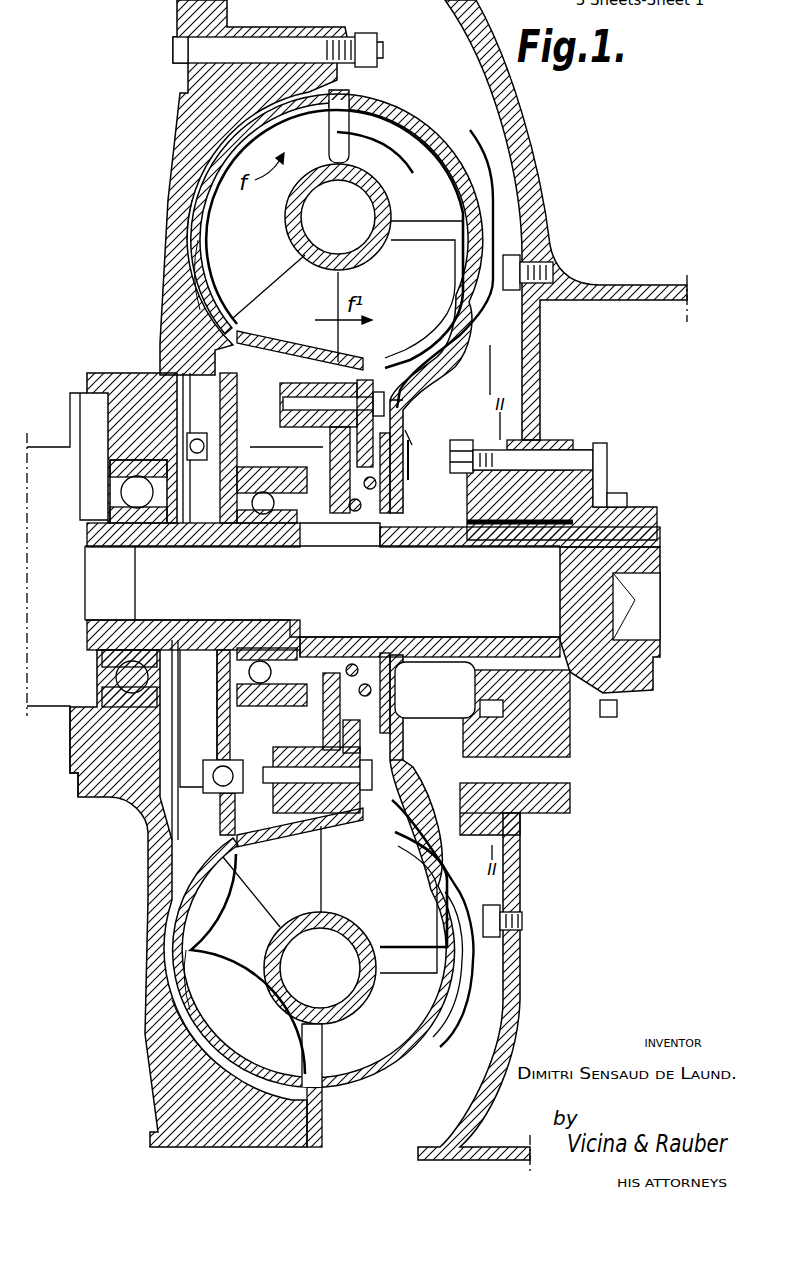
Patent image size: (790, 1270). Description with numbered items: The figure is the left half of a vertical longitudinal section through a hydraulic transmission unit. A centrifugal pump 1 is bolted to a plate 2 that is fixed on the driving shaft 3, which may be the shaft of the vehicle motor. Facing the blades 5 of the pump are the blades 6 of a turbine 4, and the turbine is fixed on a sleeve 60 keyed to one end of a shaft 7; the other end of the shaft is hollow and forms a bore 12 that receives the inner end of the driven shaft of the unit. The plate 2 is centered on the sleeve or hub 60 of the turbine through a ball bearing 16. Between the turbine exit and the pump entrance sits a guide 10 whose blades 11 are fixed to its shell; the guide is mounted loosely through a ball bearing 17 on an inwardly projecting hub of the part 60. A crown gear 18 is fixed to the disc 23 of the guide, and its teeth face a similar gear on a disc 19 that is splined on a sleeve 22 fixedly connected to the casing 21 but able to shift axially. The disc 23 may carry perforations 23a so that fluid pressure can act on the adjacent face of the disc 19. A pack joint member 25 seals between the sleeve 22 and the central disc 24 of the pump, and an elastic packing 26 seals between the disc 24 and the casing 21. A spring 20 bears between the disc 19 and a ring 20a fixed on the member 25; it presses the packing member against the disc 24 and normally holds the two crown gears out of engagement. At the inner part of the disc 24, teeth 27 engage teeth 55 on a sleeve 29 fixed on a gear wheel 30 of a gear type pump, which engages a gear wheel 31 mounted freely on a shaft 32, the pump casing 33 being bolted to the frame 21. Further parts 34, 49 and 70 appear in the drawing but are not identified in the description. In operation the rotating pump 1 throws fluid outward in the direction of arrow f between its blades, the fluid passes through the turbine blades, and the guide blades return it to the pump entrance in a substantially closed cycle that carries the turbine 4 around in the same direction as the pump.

The centrifugal pump 1 is at (418, 128).
The plate 2 is at (180, 268).
The driving shaft 3 is at (57, 688).
The turbine 4 is at (200, 240).
The blades of the pump 5 is at (432, 163).
The blades of the turbine 6 is at (213, 198).
The shaft 7 is at (140, 563).
The guide 10 is at (446, 368).
The blades of the guide 11 is at (413, 273).
The bore 12 is at (642, 633).
The ball bearing 16 is at (110, 493).
The ball bearing 17 is at (258, 520).
The crown gear 18 is at (390, 458).
The disc 19 is at (330, 745).
The spring 20 is at (350, 540).
The ring 20a is at (407, 503).
The casing 21 is at (523, 160).
The sleeve 22 is at (523, 540).
The disc 23 is at (295, 385).
The perforations 23a is at (297, 440).
The central disc 24 is at (397, 457).
The pack joint member 25 is at (403, 447).
The elastic packing 26 is at (496, 305).
The teeth 27 is at (397, 530).
The sleeve 29 is at (467, 517).
The gear wheel 30 is at (580, 450).
The gear wheel 31 is at (523, 813).
The shaft 32 is at (570, 790).
The pump casing 33 is at (535, 440).
The nut 34 is at (617, 503).
The seal housing 49 is at (333, 492).
The teeth 55 is at (437, 517).
The sleeve 60 is at (198, 518).
The partition wall 70 is at (425, 385).